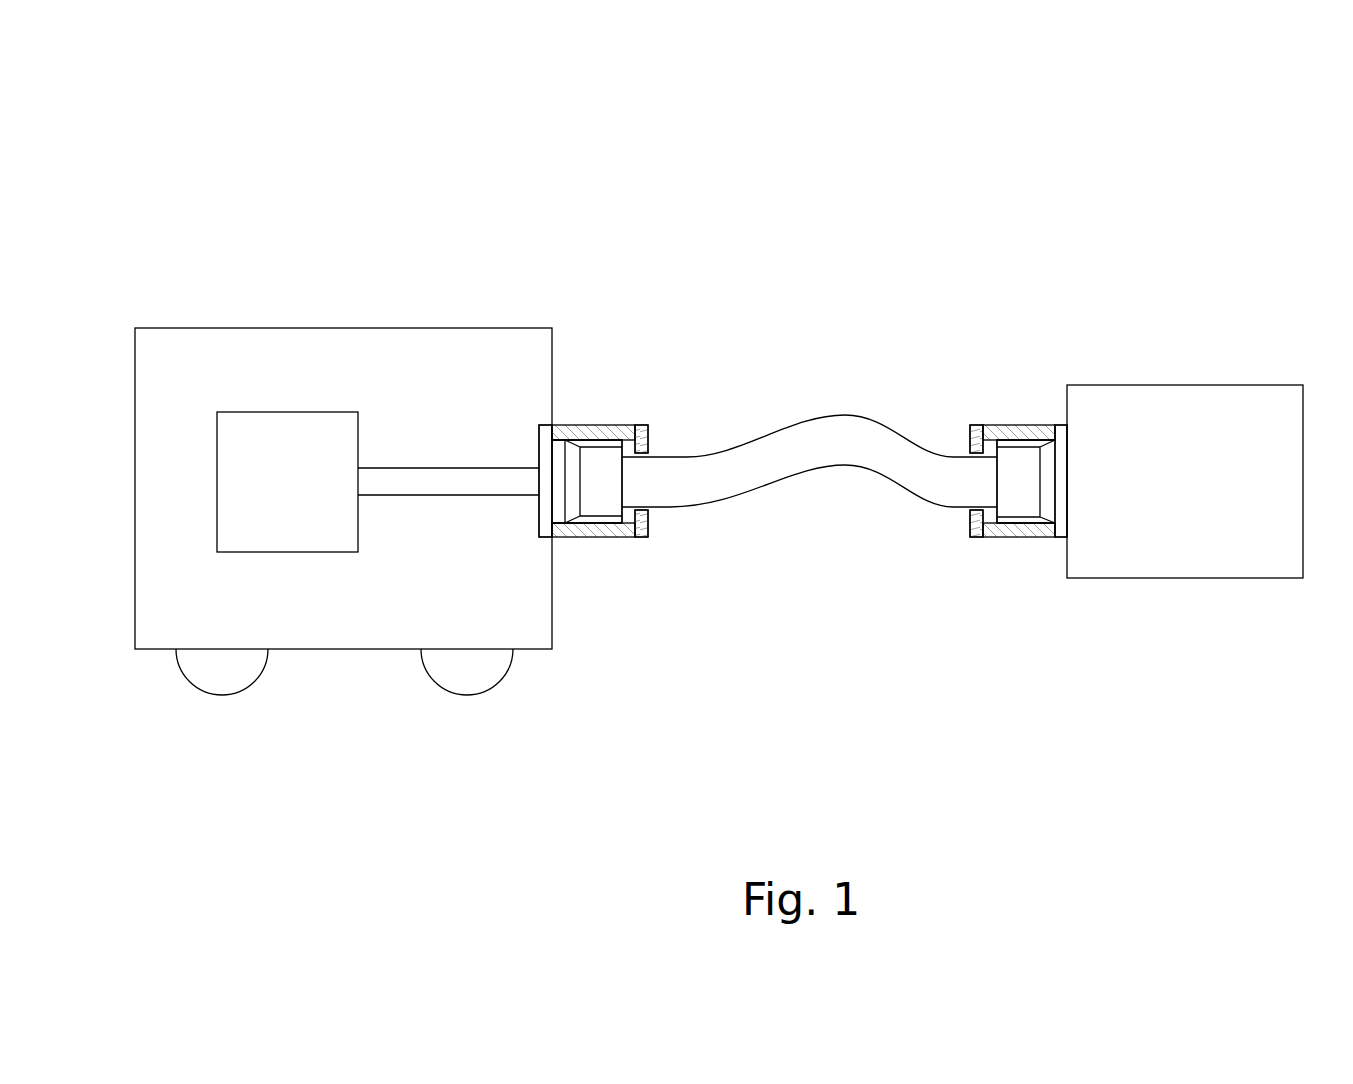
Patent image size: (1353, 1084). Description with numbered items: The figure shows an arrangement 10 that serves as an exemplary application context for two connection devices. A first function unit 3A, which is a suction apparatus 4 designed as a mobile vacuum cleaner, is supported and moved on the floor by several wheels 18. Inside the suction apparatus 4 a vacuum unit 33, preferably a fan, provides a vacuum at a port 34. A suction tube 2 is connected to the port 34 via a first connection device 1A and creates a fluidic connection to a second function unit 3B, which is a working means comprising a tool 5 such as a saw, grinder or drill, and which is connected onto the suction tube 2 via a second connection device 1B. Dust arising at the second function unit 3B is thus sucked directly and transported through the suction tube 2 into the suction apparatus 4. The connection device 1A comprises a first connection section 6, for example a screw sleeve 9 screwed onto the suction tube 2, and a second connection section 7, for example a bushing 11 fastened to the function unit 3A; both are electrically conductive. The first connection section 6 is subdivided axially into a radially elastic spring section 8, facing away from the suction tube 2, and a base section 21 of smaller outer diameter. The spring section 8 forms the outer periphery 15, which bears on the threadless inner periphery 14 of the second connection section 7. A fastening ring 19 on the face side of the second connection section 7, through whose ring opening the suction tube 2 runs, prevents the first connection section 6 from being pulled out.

The arrangement 10 is at (186, 162).
The first connection device 1A is at (613, 400).
The second connection device 1B is at (1018, 408).
The suction tube 2 is at (889, 440).
The first function unit 3A is at (346, 466).
The suction apparatus 4 is at (391, 340).
The second function unit 3B is at (1185, 434).
The tool 5 is at (1187, 388).
The vacuum unit 33 is at (294, 425).
The port 34 is at (544, 515).
The wheels 18 is at (242, 680).
The inner periphery 14 is at (578, 440).
The outer periphery 15 is at (565, 425).
The base section 21 is at (608, 460).
The fastening ring 19 is at (648, 433).
The spring section 8 is at (573, 513).
The first connection section 6 is at (810, 528).
The screw sleeve 9 is at (597, 503).
The second connection section 7 is at (803, 585).
The bushing 11 is at (612, 533).